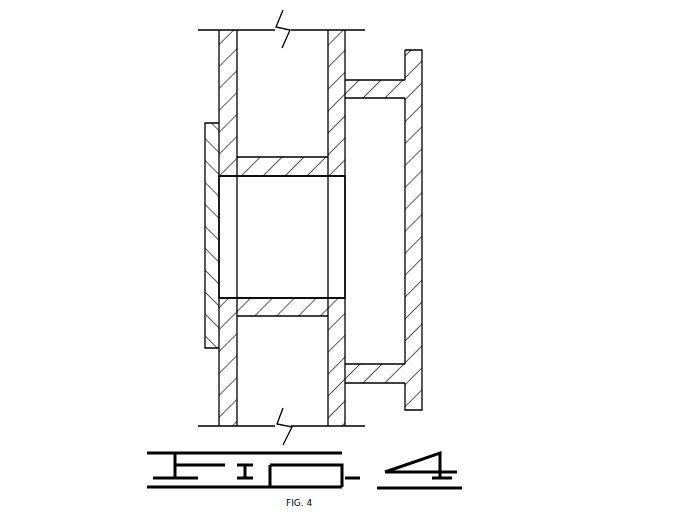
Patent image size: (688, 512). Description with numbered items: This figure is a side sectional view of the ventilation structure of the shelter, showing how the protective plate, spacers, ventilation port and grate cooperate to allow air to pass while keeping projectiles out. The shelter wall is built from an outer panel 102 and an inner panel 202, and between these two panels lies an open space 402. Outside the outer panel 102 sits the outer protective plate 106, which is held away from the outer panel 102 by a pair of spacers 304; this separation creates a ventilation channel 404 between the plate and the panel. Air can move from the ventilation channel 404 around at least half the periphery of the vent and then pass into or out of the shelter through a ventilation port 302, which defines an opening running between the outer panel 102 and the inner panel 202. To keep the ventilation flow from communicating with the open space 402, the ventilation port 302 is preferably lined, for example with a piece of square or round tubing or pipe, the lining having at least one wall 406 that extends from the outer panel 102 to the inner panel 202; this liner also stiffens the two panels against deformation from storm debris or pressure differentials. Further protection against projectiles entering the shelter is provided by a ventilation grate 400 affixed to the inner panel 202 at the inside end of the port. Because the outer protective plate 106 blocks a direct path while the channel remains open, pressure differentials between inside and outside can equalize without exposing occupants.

The outer panel 102 is at (345, 395).
The outer protective plate 106 is at (422, 170).
The inner panel 202 is at (219, 400).
The ventilation port 302 is at (260, 260).
The spacer 304 is at (368, 80).
The ventilation grate 400 is at (205, 196).
The open space 402 is at (272, 95).
The ventilation channel 404 is at (382, 272).
The wall 406 is at (307, 319).